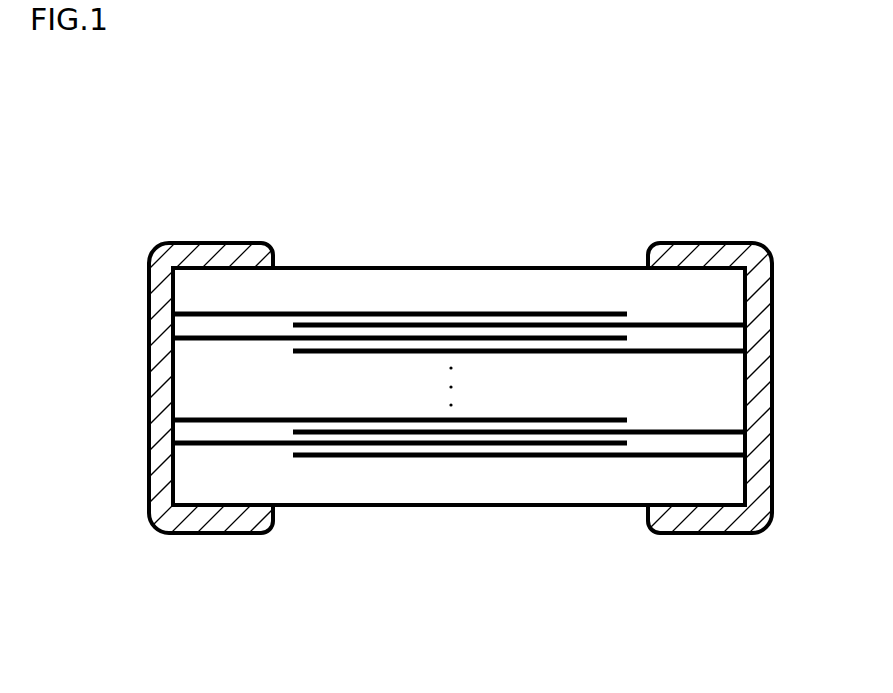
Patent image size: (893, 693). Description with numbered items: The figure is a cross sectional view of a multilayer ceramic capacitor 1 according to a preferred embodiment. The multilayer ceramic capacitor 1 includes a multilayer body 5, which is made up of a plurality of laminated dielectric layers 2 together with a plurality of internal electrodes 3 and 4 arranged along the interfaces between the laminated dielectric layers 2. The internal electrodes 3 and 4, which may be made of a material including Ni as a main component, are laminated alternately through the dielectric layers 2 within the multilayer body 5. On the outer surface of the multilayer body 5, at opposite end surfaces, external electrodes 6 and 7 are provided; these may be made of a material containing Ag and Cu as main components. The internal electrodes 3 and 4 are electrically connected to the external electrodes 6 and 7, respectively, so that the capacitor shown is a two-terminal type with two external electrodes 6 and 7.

The multilayer ceramic capacitor 1 is at (109, 122).
The dielectric layers 2 is at (502, 318).
The internal electrode 3 is at (400, 328).
The internal electrode 4 is at (559, 437).
The multilayer body 5 is at (600, 268).
The external electrode 6 is at (192, 520).
The external electrode 7 is at (708, 520).